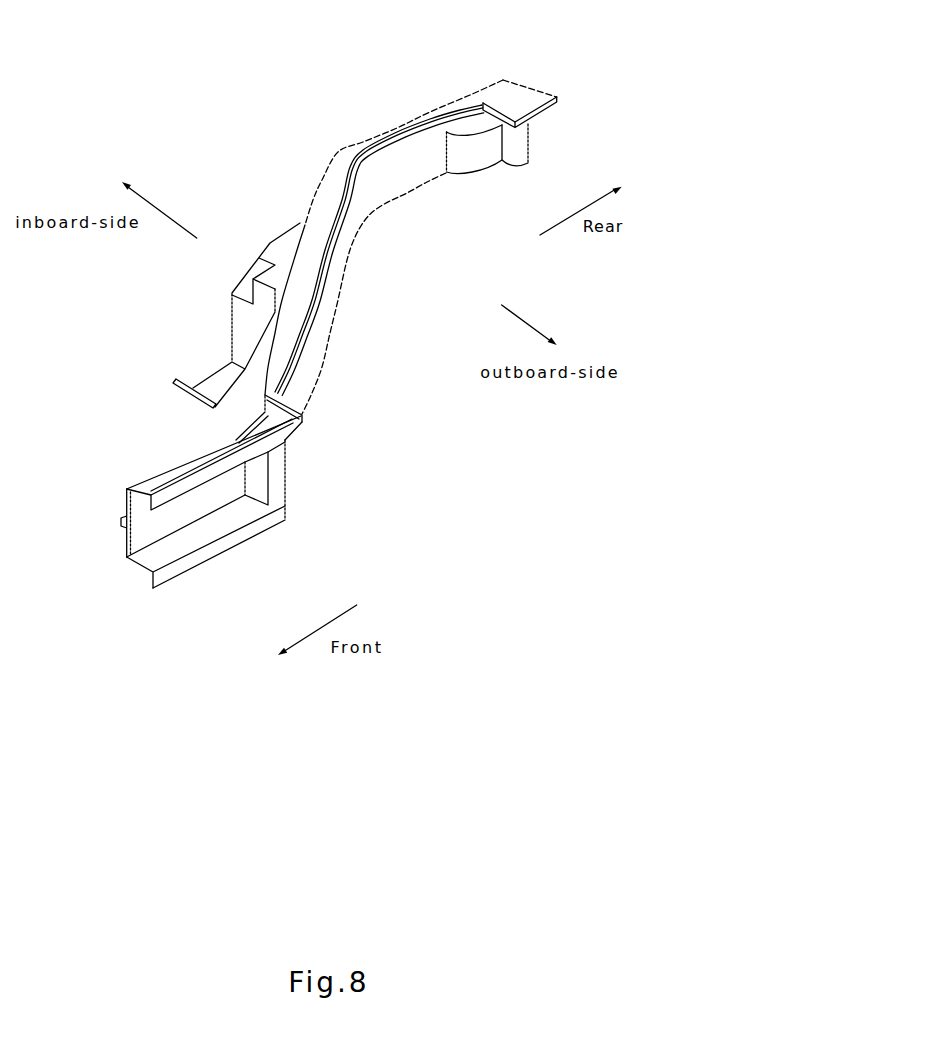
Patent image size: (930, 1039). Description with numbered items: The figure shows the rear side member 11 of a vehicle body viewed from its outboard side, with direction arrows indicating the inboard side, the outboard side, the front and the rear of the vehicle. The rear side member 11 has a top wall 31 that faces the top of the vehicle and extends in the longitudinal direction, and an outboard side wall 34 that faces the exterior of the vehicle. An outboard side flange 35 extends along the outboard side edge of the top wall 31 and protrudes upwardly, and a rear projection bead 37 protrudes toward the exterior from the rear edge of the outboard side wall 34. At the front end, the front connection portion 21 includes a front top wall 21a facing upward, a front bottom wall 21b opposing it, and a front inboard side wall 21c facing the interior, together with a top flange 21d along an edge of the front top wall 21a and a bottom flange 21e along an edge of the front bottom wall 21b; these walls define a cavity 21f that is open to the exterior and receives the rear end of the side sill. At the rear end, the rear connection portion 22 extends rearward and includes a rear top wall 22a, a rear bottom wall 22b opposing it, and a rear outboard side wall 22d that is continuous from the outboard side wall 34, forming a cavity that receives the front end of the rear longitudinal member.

The rear side member 11 is at (283, 211).
The front connection portion 21 is at (177, 523).
The front top wall 21a is at (146, 491).
The front bottom wall 21b is at (138, 574).
The front inboard side wall 21c is at (123, 543).
The top flange 21d is at (214, 470).
The bottom flange 21e is at (178, 577).
The cavity 21f is at (215, 528).
The rear connection portion 22 is at (547, 90).
The rear top wall 22a is at (524, 104).
The rear bottom wall 22b is at (535, 140).
The rear outboard side wall 22d is at (542, 120).
The top wall 31 is at (325, 199).
The outboard side wall 34 is at (382, 184).
The outboard side flange 35 is at (410, 127).
The rear projection bead 37 is at (487, 162).